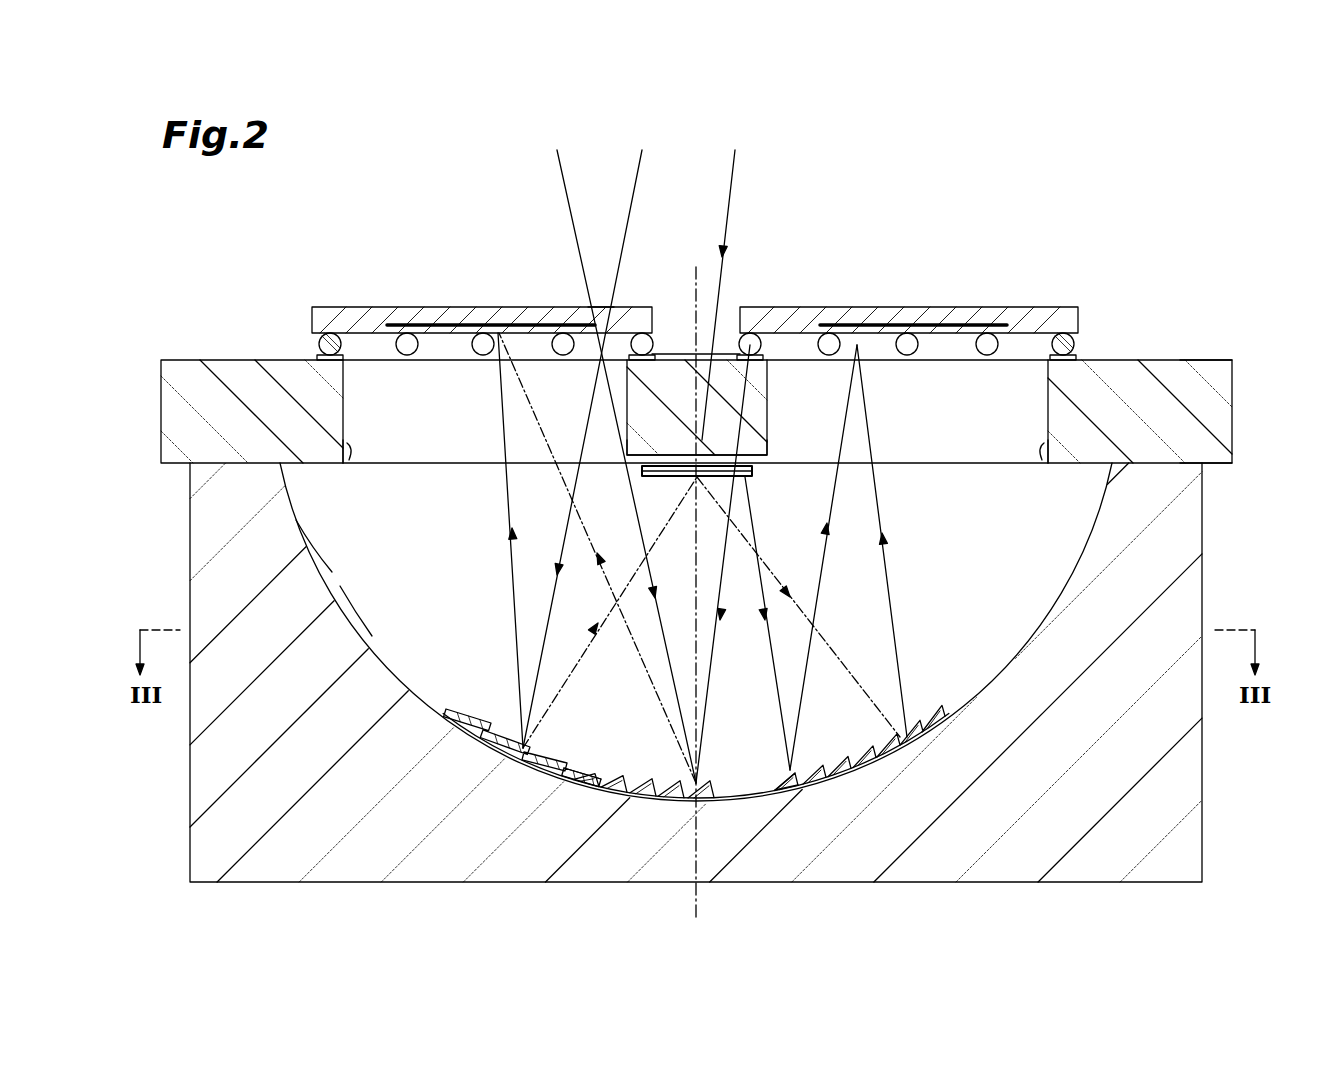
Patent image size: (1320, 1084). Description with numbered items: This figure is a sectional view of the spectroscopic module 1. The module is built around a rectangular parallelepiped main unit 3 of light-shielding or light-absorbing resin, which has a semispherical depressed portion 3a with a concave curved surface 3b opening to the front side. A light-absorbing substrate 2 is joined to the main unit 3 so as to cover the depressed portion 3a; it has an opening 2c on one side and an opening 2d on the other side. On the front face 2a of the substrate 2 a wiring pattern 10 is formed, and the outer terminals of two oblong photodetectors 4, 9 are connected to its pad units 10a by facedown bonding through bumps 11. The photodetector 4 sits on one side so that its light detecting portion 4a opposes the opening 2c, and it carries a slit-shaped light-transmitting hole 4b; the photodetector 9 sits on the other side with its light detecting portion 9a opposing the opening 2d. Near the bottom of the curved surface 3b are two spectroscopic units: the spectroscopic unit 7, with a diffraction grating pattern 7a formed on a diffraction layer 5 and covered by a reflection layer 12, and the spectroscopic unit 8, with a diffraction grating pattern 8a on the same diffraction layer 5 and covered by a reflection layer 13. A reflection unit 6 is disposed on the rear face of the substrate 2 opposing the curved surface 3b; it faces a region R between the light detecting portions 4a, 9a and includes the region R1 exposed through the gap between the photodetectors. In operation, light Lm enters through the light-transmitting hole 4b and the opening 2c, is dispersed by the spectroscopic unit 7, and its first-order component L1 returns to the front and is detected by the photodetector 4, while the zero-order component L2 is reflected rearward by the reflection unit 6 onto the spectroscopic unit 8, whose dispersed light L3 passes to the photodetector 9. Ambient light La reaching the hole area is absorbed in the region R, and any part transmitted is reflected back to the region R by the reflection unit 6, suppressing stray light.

The spectroscopic module 1 is at (1112, 228).
The substrate 2 is at (1212, 405).
The front face 2a is at (1186, 360).
The opening 2c is at (346, 465).
The opening 2d is at (1046, 465).
The main unit 3 is at (208, 776).
The depressed portion 3a is at (326, 568).
The curved surface 3b is at (358, 648).
The photodetector 4 is at (385, 303).
The light detecting portion 4a is at (441, 321).
The light-transmitting hole 4b is at (600, 306).
The diffraction layer 5 is at (745, 806).
The reflection unit 6 is at (665, 478).
The spectroscopic unit 7 is at (520, 716).
The diffraction grating pattern 7a is at (600, 797).
The spectroscopic unit 8 is at (912, 705).
The diffraction grating pattern 8a is at (810, 788).
The photodetector 9 is at (858, 305).
The light detecting portion 9a is at (966, 322).
The wiring pattern 10 is at (318, 355).
The pad unit 10a is at (1070, 353).
The bump 11 is at (484, 333).
The reflection layer 12 is at (623, 780).
The reflection layer 13 is at (818, 760).
The region R is at (742, 440).
The region R1 is at (690, 355).
The ambient light La is at (736, 191).
The incident light Lm is at (634, 186).
The first light L1 is at (508, 582).
The second light L2 is at (855, 680).
The third light L3 is at (884, 556).